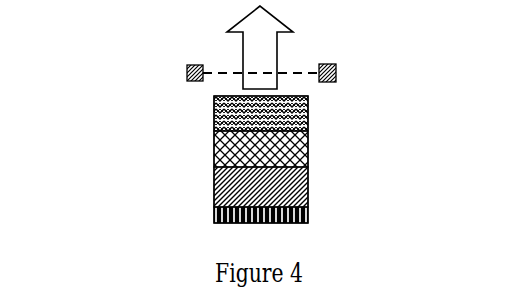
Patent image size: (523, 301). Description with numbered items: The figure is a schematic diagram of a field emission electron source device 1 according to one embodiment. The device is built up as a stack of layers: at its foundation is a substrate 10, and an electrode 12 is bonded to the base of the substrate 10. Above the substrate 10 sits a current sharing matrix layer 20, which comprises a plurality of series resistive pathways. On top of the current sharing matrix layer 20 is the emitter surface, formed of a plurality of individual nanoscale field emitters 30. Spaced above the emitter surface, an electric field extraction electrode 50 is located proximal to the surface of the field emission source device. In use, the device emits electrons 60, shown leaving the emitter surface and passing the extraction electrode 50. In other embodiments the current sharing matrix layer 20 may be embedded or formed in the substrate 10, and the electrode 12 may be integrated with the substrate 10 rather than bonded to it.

The field emission electron source device 1 is at (162, 115).
The substrate 10 is at (318, 188).
The electrode 12 is at (203, 215).
The current sharing matrix layer 20 is at (318, 150).
The nanoscale field emitters 30 is at (318, 113).
The electric field extraction electrode 50 is at (344, 71).
The electrons 60 is at (294, 51).